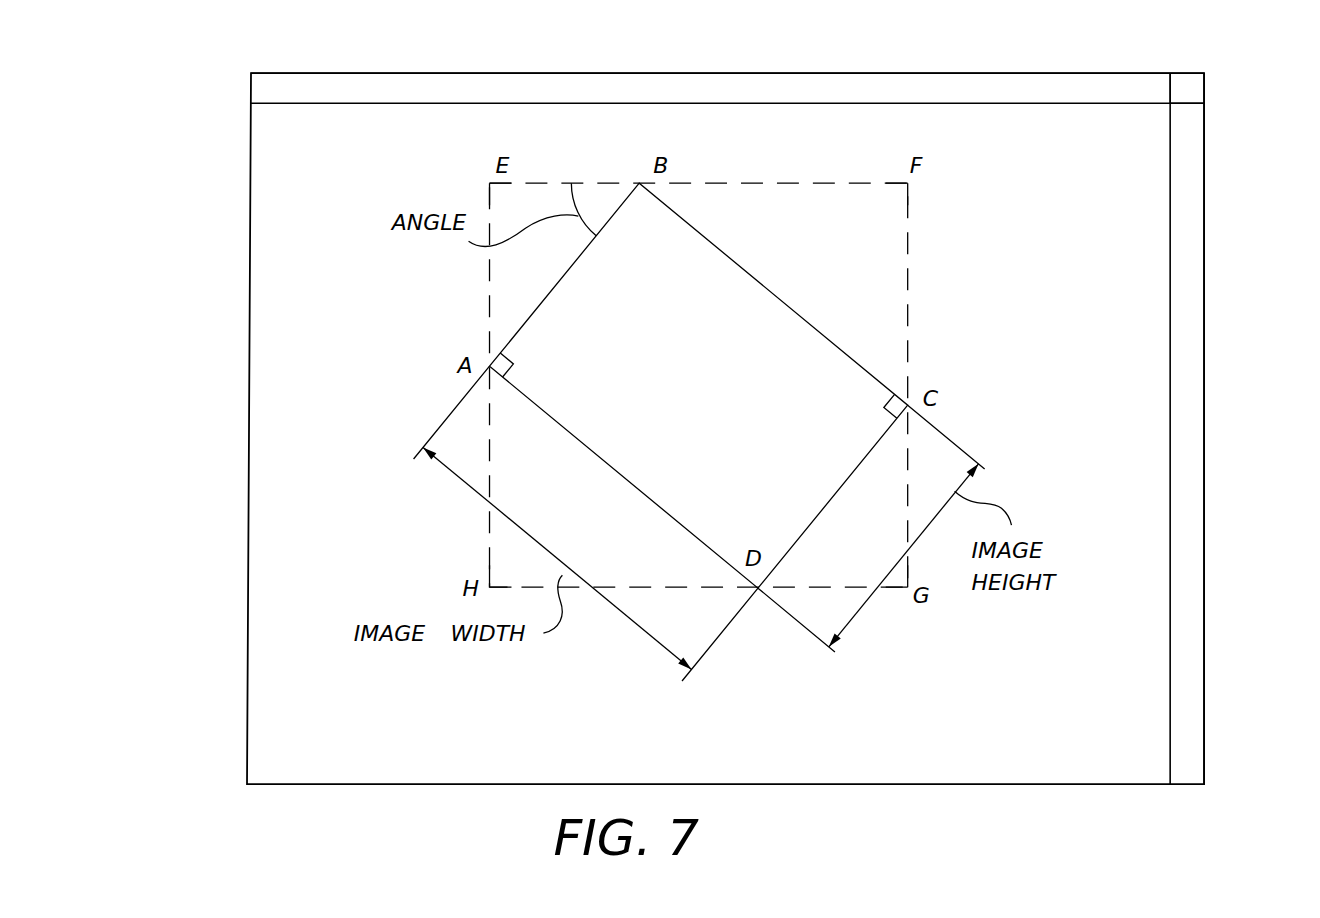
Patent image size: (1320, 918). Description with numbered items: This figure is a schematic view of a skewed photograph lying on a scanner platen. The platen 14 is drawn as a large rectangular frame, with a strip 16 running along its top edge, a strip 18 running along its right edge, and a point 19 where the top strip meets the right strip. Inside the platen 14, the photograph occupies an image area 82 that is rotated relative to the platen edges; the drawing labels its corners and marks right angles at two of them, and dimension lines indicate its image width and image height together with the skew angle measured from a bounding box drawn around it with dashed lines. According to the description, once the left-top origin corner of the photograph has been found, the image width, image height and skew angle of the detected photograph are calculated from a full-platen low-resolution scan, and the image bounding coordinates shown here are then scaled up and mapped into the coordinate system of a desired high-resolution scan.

The platen / scan sheet 14 is at (247, 180).
The top edge strip 16 is at (823, 84).
The right edge strip 18 is at (1172, 277).
The corner reference point 19 is at (1175, 96).
The image area 82 is at (699, 385).